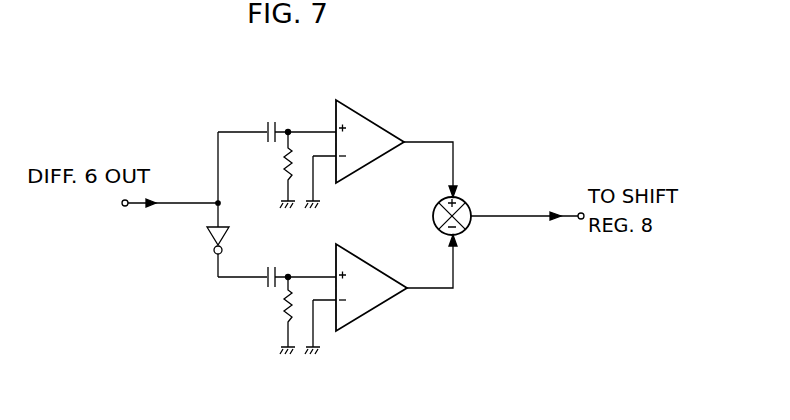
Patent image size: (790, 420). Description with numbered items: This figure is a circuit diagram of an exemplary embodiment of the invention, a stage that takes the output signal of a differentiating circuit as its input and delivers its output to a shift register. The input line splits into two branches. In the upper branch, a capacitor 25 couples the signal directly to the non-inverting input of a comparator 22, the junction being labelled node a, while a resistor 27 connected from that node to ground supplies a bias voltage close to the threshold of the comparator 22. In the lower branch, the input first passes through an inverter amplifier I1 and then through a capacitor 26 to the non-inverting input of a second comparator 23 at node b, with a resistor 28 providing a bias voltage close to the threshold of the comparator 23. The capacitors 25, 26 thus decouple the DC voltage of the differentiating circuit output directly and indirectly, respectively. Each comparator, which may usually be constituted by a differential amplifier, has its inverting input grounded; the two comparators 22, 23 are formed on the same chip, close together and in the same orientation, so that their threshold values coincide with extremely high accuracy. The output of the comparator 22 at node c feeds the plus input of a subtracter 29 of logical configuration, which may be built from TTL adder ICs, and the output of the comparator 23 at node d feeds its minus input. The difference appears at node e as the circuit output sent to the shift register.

The comparator 22 is at (364, 116).
The comparator 23 is at (376, 308).
The capacitor 25 is at (269, 120).
The capacitor 26 is at (265, 287).
The resistor 27 is at (284, 170).
The resistor 28 is at (284, 312).
The subtracter 29 is at (466, 230).
The inverter amplifier I1 is at (213, 250).
The node a is at (289, 131).
The node b is at (289, 276).
The node c is at (433, 141).
The node d is at (433, 290).
The node e is at (500, 214).